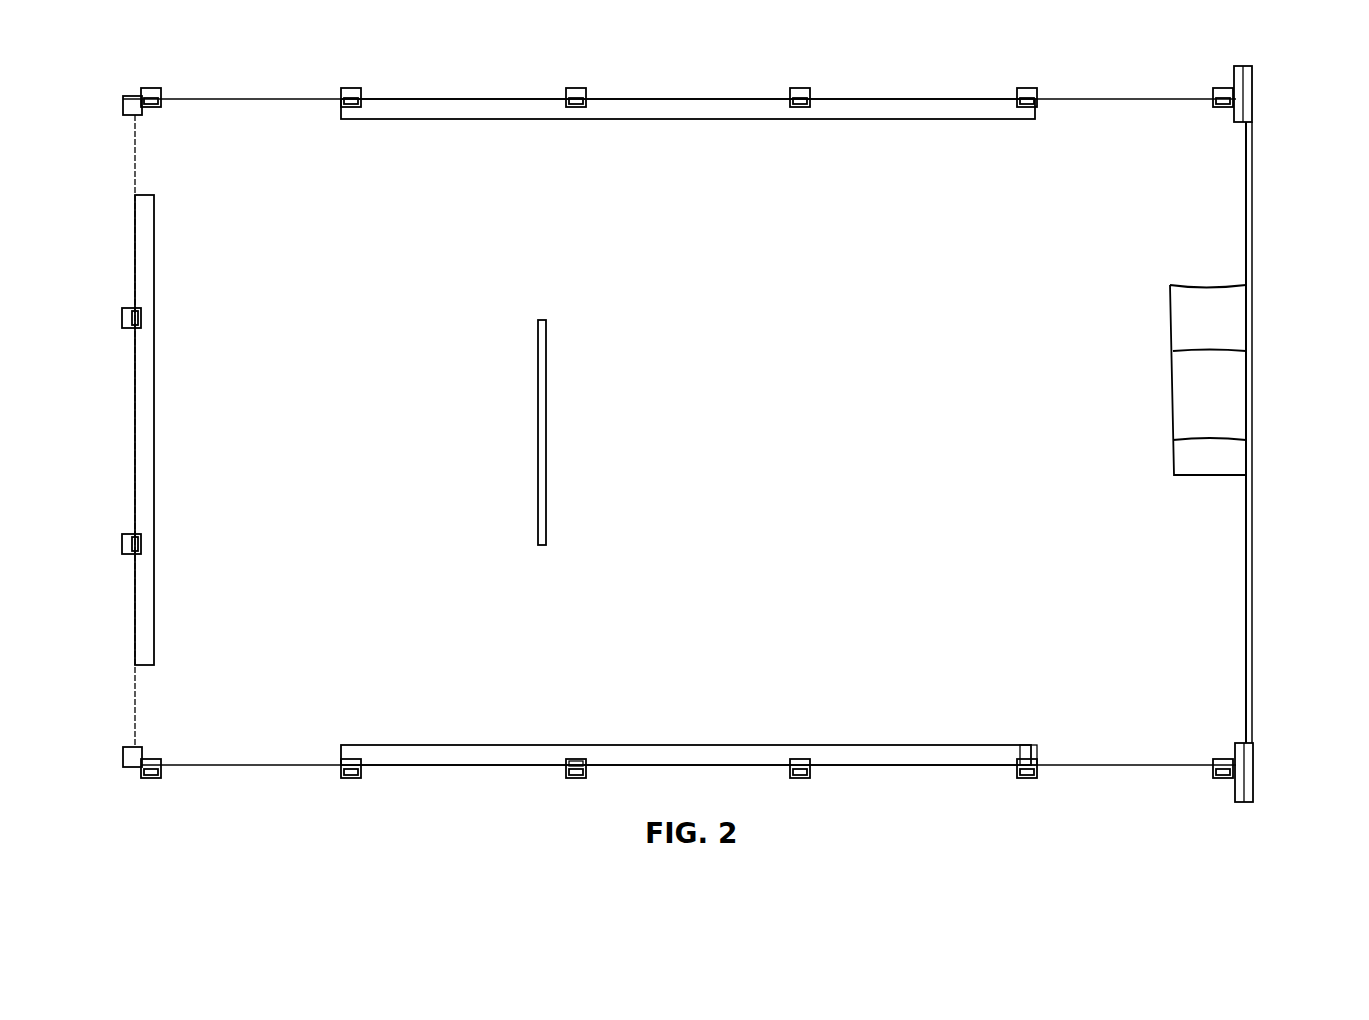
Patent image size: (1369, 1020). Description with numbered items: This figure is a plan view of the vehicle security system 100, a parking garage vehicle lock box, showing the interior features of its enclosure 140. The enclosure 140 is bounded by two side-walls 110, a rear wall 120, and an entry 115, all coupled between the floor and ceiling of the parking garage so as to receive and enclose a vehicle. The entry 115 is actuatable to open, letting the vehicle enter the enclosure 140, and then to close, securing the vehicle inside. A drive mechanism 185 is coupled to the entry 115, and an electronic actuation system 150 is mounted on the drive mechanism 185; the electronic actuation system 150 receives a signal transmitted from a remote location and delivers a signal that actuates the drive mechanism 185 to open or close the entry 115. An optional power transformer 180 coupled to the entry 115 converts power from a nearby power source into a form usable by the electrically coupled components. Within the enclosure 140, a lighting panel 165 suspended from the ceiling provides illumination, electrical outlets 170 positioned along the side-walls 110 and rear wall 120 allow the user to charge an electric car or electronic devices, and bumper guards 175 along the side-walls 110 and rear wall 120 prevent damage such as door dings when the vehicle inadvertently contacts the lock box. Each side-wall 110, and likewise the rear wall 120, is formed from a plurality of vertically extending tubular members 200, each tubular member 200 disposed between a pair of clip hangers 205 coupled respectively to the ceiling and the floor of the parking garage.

The vehicle security system 100 is at (988, 56).
The side-wall 110 is at (261, 98).
The entry 115 is at (1272, 652).
The rear wall 120 is at (133, 690).
The enclosure 140 is at (727, 430).
The electronic actuation system 150 is at (1195, 463).
The lighting panel 165 is at (546, 527).
The electrical outlet 170 is at (1036, 743).
The bumper guard 175 is at (928, 120).
The power transformer 180 is at (1218, 343).
The drive mechanism 185 is at (1218, 416).
The tubular member 200 is at (572, 780).
The clip hanger 205 is at (578, 758).